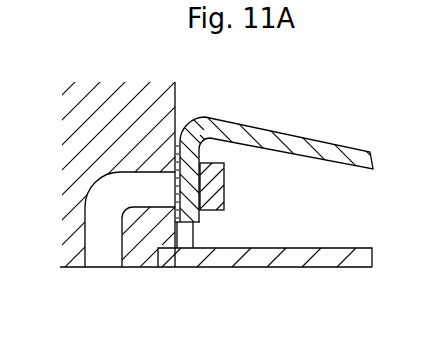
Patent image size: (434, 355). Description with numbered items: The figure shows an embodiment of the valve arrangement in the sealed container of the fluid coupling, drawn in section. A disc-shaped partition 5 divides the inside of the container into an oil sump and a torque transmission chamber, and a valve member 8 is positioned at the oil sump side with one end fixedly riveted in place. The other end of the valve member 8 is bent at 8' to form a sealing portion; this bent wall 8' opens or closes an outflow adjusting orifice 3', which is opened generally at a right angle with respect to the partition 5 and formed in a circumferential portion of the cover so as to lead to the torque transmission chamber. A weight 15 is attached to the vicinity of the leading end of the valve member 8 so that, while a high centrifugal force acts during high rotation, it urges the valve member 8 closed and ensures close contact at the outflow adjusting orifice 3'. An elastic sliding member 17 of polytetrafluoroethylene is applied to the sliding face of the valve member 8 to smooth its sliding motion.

The outflow adjusting orifice 3' is at (186, 201).
The partition 5 is at (303, 255).
The valve member 8 is at (276, 167).
The bent wall 8' is at (196, 272).
The weight 15 is at (225, 193).
The elastic sliding member 17 is at (176, 152).